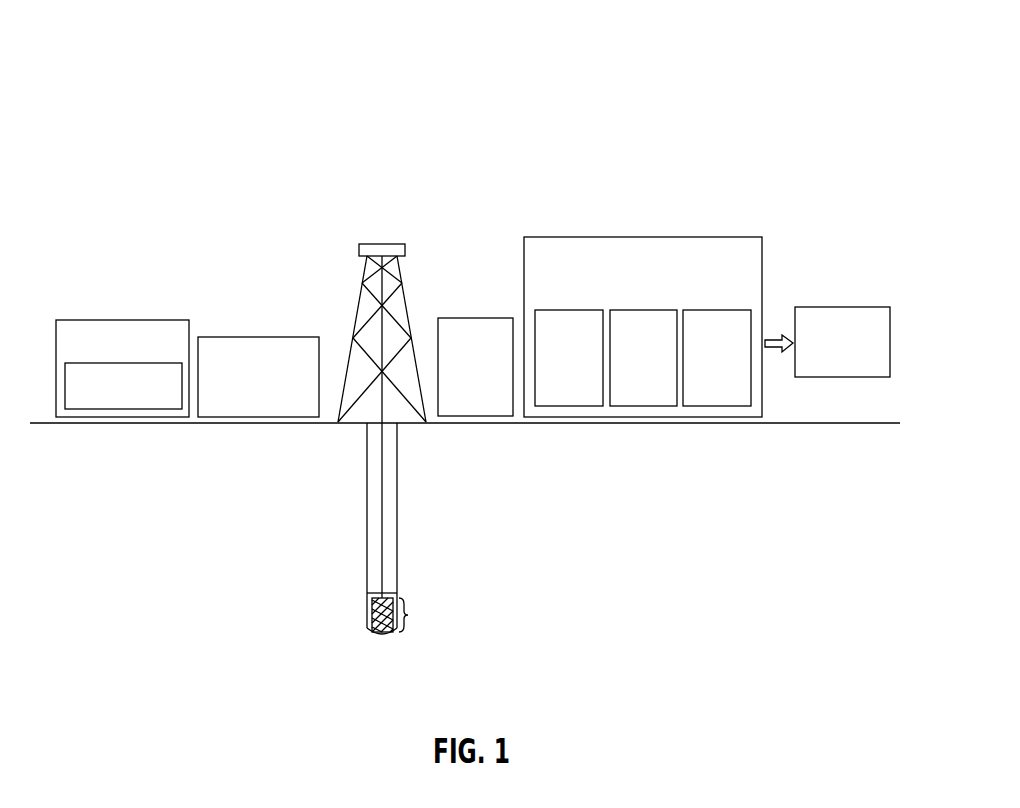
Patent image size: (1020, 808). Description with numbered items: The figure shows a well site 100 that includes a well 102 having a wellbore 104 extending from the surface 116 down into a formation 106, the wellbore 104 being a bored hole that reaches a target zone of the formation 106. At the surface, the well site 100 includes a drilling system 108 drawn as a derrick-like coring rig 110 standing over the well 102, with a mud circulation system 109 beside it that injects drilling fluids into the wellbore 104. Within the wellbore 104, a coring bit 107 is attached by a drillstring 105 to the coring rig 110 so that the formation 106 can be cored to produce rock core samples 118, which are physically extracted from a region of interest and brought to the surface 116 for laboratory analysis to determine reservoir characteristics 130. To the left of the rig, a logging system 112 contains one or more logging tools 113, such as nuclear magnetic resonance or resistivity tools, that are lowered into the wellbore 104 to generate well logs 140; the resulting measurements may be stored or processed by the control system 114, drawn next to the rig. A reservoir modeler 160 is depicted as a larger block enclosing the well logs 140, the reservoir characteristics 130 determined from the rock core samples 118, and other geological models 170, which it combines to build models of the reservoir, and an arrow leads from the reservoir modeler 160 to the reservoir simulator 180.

The well site 100 is at (740, 55).
The well 102 is at (365, 438).
The wellbore 104 is at (393, 475).
The drillstring 105 is at (383, 528).
The formation 106 is at (578, 510).
The coring bit 107 is at (370, 604).
The drilling system 108 is at (358, 317).
The mud circulation system 109 is at (258, 335).
The coring rig 110 is at (380, 243).
The logging system 112 is at (119, 318).
The logging tool 113 is at (122, 361).
The control system 114 is at (450, 317).
The surface 116 is at (812, 423).
The rock core sample 118 is at (424, 615).
The reservoir characteristics 130 is at (620, 309).
The well logs 140 is at (545, 309).
The reservoir modeler 160 is at (697, 237).
The geological models 170 is at (692, 309).
The reservoir simulator 180 is at (843, 306).